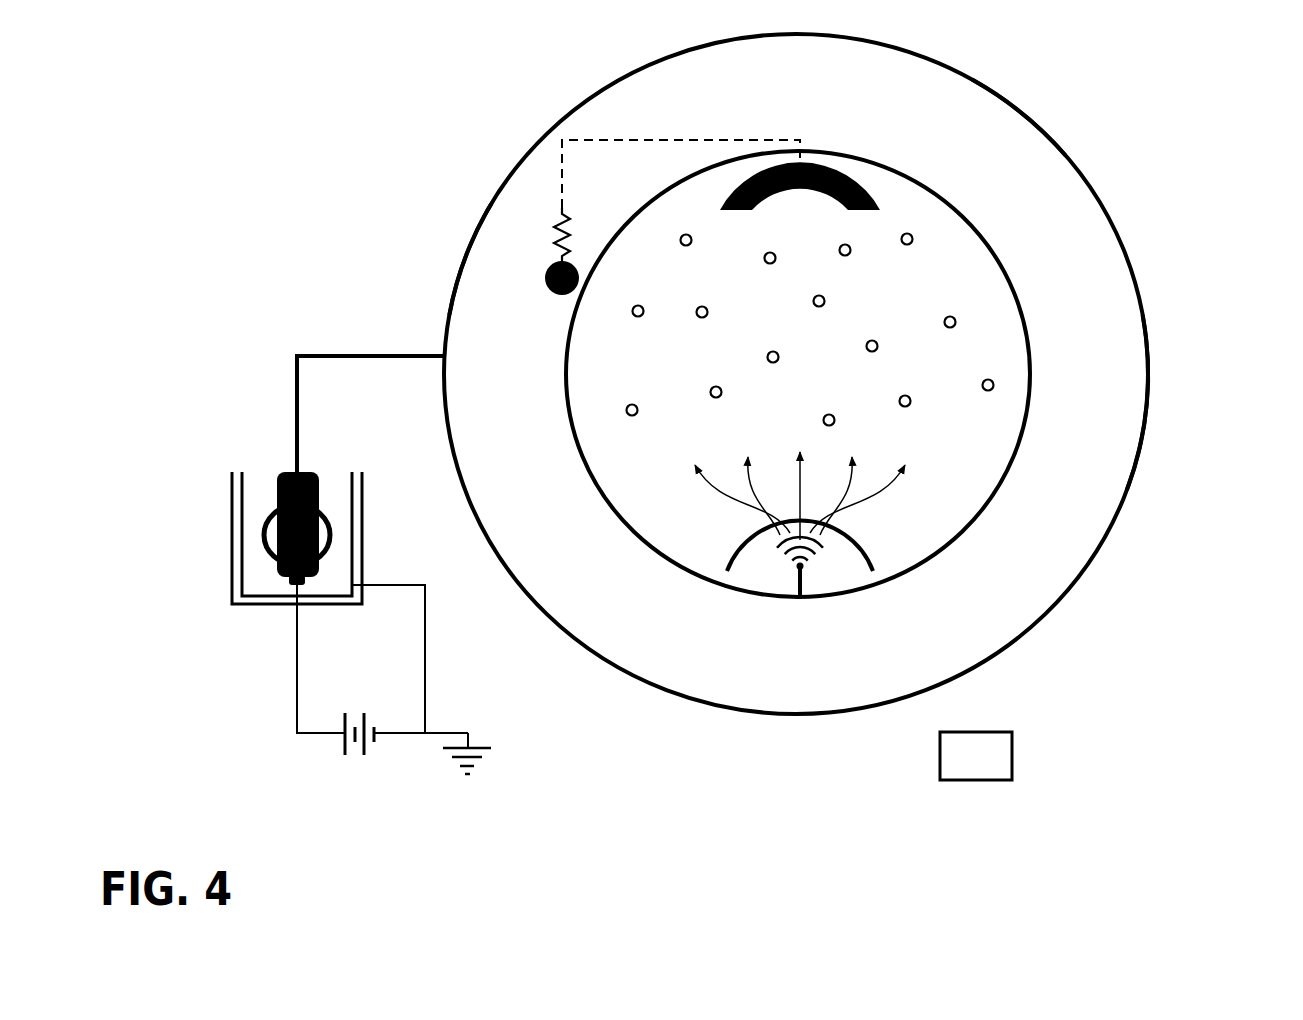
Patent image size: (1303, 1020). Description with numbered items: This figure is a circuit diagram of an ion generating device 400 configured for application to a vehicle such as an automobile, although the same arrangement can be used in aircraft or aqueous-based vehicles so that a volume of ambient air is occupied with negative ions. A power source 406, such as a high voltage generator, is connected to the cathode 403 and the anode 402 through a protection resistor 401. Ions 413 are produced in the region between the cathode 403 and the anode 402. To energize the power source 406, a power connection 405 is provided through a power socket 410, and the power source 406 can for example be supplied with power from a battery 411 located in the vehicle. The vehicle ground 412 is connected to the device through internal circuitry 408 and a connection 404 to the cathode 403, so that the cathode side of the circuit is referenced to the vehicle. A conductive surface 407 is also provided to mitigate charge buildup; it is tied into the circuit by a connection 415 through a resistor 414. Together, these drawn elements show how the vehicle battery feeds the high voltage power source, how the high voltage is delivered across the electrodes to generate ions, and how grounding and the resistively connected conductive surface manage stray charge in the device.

The ion generating device 400 is at (932, 702).
The protection resistor 401 is at (726, 706).
The anode 402 is at (848, 557).
The cathode 403 is at (884, 184).
The connection 404 is at (472, 265).
The power connection 405 is at (266, 493).
The power source 406 is at (1148, 438).
The conductive surface 407 is at (1043, 130).
The internal circuitry 408 is at (448, 328).
The power socket 410 is at (372, 522).
The battery 411 is at (328, 749).
The vehicle ground 412 is at (494, 757).
The ions 413 is at (880, 310).
The resistor 414 is at (552, 225).
The connection 415 is at (540, 270).